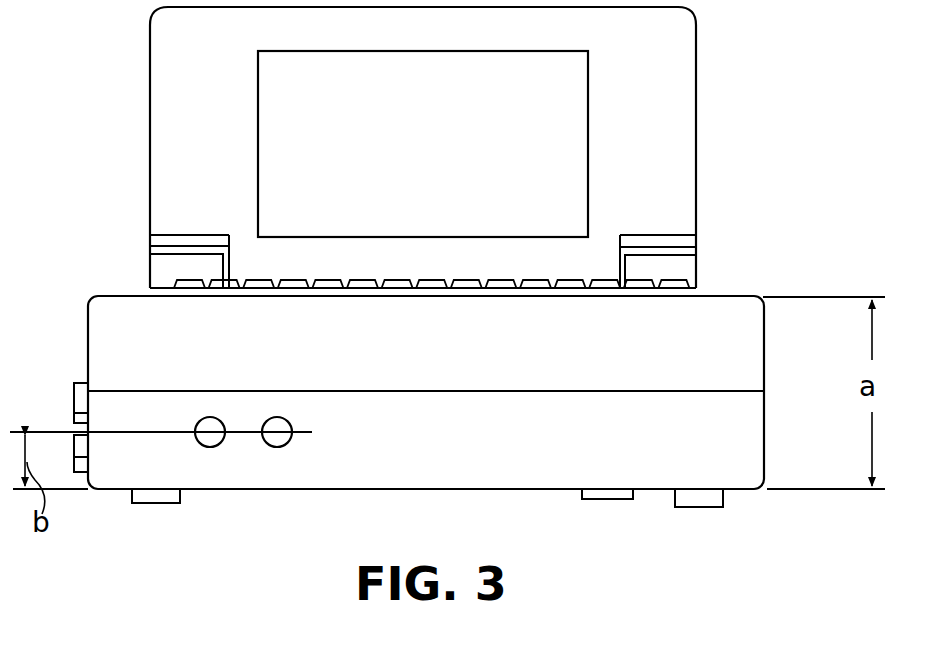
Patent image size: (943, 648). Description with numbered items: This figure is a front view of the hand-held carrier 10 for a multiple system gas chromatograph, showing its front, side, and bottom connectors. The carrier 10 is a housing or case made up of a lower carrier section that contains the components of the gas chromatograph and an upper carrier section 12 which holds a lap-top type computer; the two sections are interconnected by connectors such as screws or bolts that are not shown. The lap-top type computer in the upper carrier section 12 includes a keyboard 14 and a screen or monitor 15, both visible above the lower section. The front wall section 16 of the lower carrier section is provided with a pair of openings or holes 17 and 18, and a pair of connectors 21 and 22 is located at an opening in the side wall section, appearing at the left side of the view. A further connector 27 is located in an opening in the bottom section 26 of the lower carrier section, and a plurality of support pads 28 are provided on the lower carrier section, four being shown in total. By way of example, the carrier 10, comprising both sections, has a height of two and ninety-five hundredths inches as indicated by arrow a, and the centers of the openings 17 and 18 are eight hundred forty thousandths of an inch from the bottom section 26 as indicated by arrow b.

The hand-held carrier 10 is at (770, 188).
The upper carrier section 12 is at (66, 303).
The keyboard 14 is at (415, 280).
The screen or monitor 15 is at (458, 157).
The front wall section 16 is at (530, 450).
The opening or hole 17 is at (208, 417).
The opening or hole 18 is at (278, 417).
The connector 21 is at (74, 456).
The connector 22 is at (74, 400).
The bottom section 26 is at (337, 489).
The connector 27 is at (618, 499).
The support pad 28 is at (180, 496).